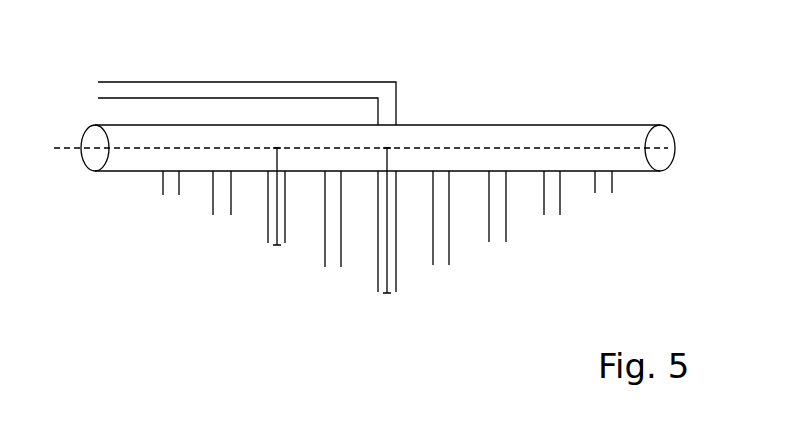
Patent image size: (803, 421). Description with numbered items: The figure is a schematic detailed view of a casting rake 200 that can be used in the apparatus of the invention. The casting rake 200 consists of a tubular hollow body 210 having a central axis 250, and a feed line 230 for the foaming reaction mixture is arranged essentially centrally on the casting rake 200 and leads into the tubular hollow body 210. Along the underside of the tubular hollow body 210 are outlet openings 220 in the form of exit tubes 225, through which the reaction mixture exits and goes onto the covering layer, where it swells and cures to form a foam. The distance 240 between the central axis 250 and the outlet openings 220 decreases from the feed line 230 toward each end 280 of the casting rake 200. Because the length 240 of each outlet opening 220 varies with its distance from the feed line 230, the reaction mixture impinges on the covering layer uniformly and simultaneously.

The casting rake 200 is at (538, 108).
The tubular hollow body 210 is at (619, 138).
The outlet openings 220 is at (553, 218).
The exit tubes 225 is at (566, 201).
The feed line 230 is at (130, 82).
The distance 240 is at (273, 202).
The central axis 250 is at (63, 147).
The end 280 is at (88, 172).